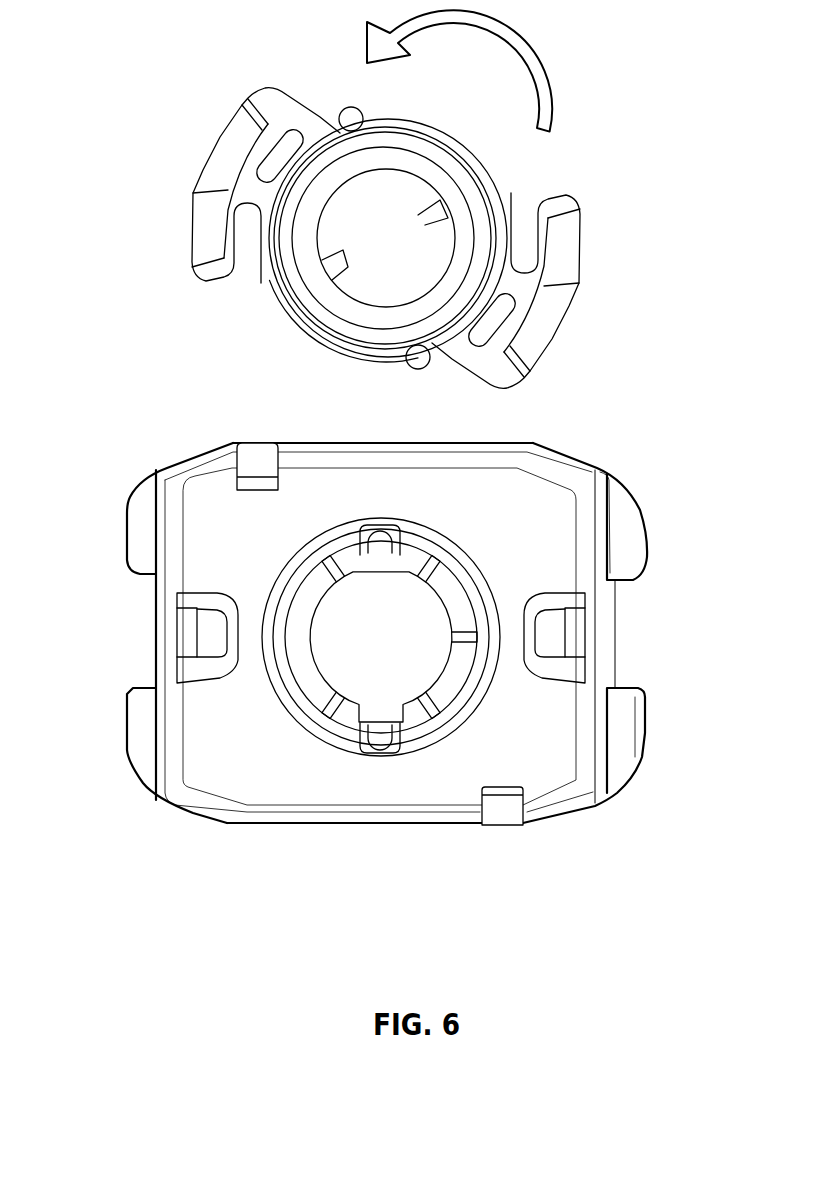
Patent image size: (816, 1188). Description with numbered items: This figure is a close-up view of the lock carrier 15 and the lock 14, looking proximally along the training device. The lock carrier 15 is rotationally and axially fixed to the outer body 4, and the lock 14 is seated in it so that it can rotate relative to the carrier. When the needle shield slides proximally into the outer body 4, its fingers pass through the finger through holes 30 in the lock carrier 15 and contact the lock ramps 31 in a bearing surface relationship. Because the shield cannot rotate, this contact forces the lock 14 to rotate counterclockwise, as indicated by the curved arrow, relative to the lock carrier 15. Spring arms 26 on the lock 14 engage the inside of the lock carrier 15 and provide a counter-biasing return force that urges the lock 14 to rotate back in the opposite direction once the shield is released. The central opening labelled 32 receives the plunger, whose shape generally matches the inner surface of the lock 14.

The outer body 4 is at (342, 263).
The lock 14 is at (383, 238).
The lock carrier 15 is at (620, 518).
The spring arms 26 is at (497, 193).
The finger through holes 30 is at (213, 632).
The lock ramps 31 is at (198, 230).
The ring receptacle 32 is at (383, 632).